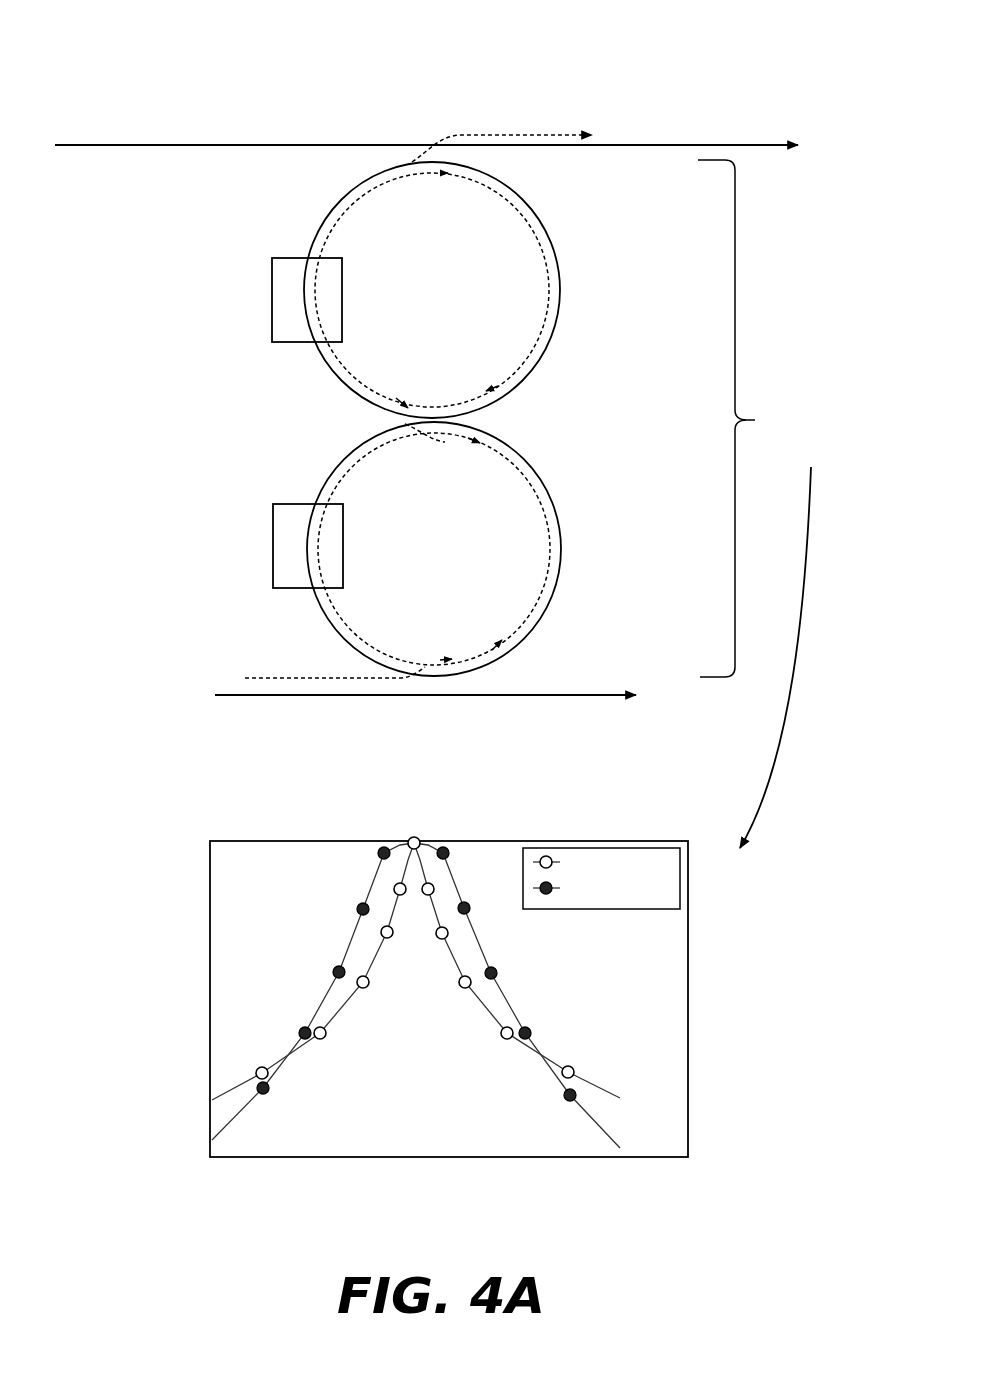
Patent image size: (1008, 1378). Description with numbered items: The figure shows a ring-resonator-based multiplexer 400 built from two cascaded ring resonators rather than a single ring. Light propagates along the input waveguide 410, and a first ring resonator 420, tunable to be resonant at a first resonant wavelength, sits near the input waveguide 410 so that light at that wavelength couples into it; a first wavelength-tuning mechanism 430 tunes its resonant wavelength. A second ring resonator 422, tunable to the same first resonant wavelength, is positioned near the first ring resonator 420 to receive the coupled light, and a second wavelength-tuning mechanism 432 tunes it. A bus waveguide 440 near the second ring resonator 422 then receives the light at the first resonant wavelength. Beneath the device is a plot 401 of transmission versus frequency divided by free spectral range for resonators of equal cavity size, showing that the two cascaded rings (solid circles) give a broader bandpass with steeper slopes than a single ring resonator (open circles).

The ring-resonator-based multiplexer 400 is at (182, 82).
The plot 401 is at (272, 832).
The input waveguide 410 is at (578, 695).
The first ring resonator 420 is at (541, 478).
The second ring resonator 422 is at (560, 241).
The first wavelength-tuning mechanism 430 is at (275, 555).
The second wavelength-tuning mechanism 432 is at (270, 310).
The bus waveguide 440 is at (760, 145).